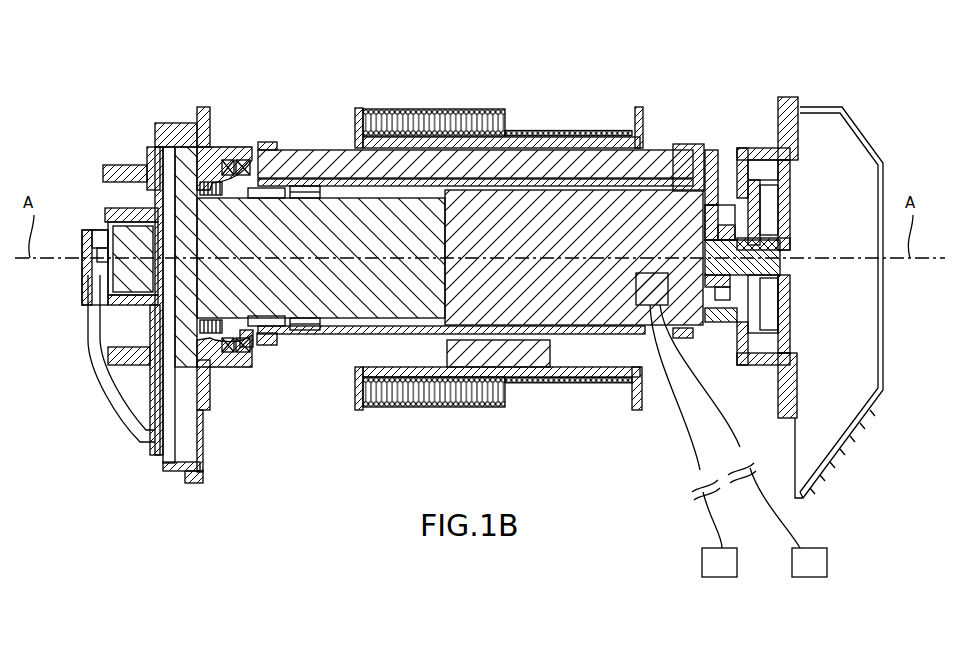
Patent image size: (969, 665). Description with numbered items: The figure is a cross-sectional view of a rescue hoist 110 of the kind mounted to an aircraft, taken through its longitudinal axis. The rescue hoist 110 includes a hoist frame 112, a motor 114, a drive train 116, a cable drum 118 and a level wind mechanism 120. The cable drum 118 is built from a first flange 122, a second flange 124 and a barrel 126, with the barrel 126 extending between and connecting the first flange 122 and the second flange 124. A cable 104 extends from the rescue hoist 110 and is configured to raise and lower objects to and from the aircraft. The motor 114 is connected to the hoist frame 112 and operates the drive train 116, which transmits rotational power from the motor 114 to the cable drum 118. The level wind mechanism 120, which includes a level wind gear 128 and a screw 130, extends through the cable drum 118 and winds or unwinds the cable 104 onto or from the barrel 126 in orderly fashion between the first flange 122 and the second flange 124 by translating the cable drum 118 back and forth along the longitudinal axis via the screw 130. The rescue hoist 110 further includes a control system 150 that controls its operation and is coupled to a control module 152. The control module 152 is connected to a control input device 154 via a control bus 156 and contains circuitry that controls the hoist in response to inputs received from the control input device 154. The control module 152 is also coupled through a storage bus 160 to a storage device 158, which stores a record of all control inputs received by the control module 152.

The rescue hoist 110 is at (150, 80).
The hoist frame 112 is at (203, 107).
The first flange 122 is at (355, 123).
The cable 104 is at (495, 108).
The barrel 126 is at (560, 130).
The cable drum 118 is at (596, 105).
The second flange 124 is at (647, 107).
The level wind mechanism 120 is at (668, 140).
The screw 130 is at (710, 150).
The level wind gear 128 is at (728, 160).
The drive train 116 is at (342, 298).
The motor 114 is at (688, 312).
The control module 152 is at (668, 287).
The control bus 156 is at (700, 465).
The storage bus 160 is at (756, 475).
The control system 150 is at (676, 525).
The control input device 154 is at (728, 577).
The storage device 158 is at (812, 577).